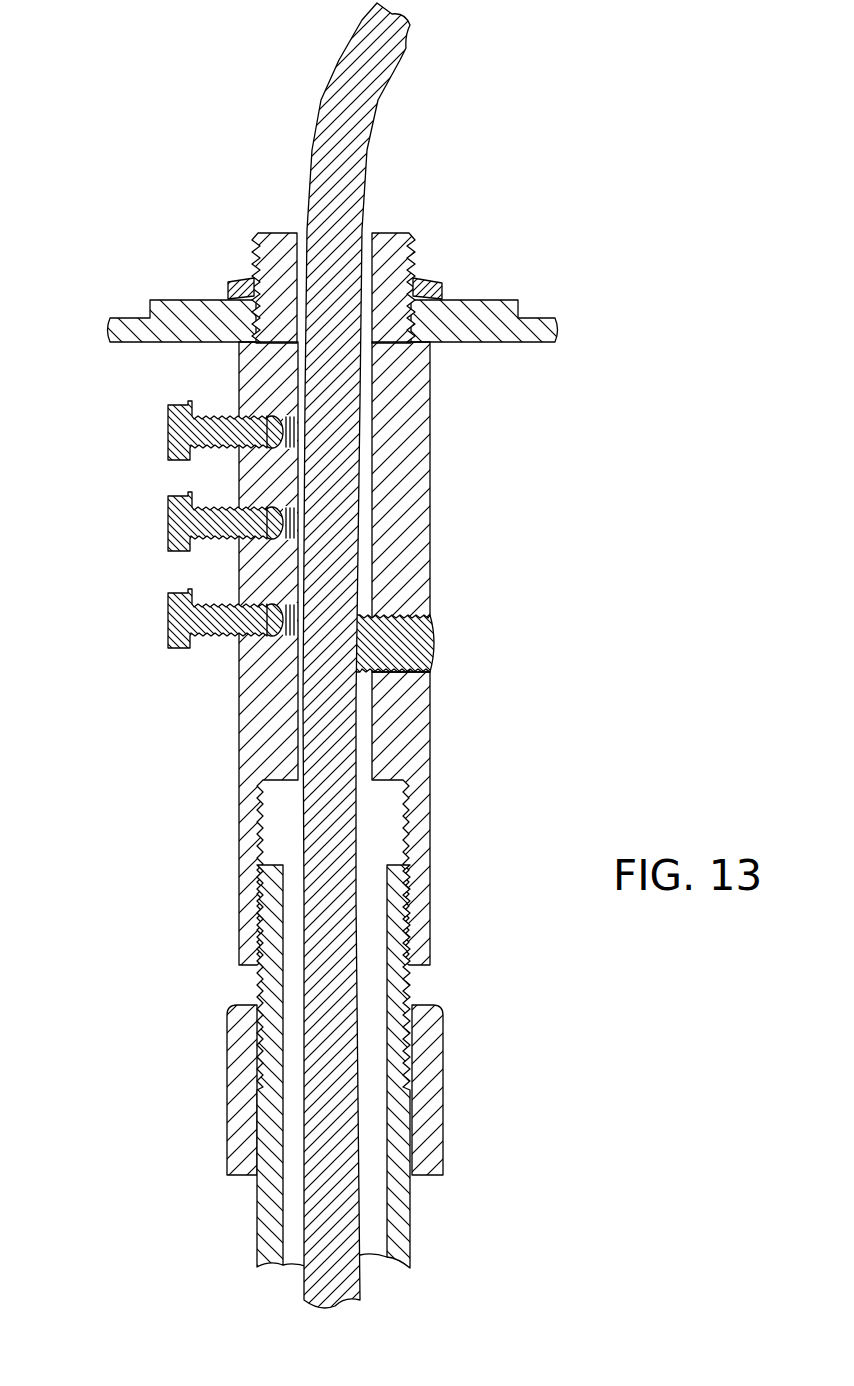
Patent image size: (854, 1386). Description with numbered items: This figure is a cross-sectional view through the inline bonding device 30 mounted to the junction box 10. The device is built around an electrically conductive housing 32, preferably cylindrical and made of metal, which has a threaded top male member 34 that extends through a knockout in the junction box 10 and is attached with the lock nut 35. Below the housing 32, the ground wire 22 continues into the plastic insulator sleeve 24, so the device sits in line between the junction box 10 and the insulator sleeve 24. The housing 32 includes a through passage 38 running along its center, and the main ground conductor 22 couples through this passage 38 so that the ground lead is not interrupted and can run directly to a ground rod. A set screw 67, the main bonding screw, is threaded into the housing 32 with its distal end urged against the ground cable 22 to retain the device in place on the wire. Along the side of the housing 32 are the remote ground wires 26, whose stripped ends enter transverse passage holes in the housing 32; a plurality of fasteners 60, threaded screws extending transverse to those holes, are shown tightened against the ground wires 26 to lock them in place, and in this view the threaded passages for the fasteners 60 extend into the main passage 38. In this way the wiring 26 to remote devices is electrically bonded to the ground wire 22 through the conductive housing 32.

The junction box 10 is at (124, 350).
The ground wire 22 is at (388, 52).
The plastic insulator sleeve 24 is at (245, 1221).
The wiring 26 is at (270, 420).
The inline bonding device 30 is at (316, 653).
The electrically conductive housing 32 is at (402, 485).
The threaded top male member 34 is at (385, 243).
The lock nut 35 is at (428, 283).
The through passage 38 is at (375, 738).
The fasteners 60 is at (178, 433).
The set screw 67 is at (407, 633).